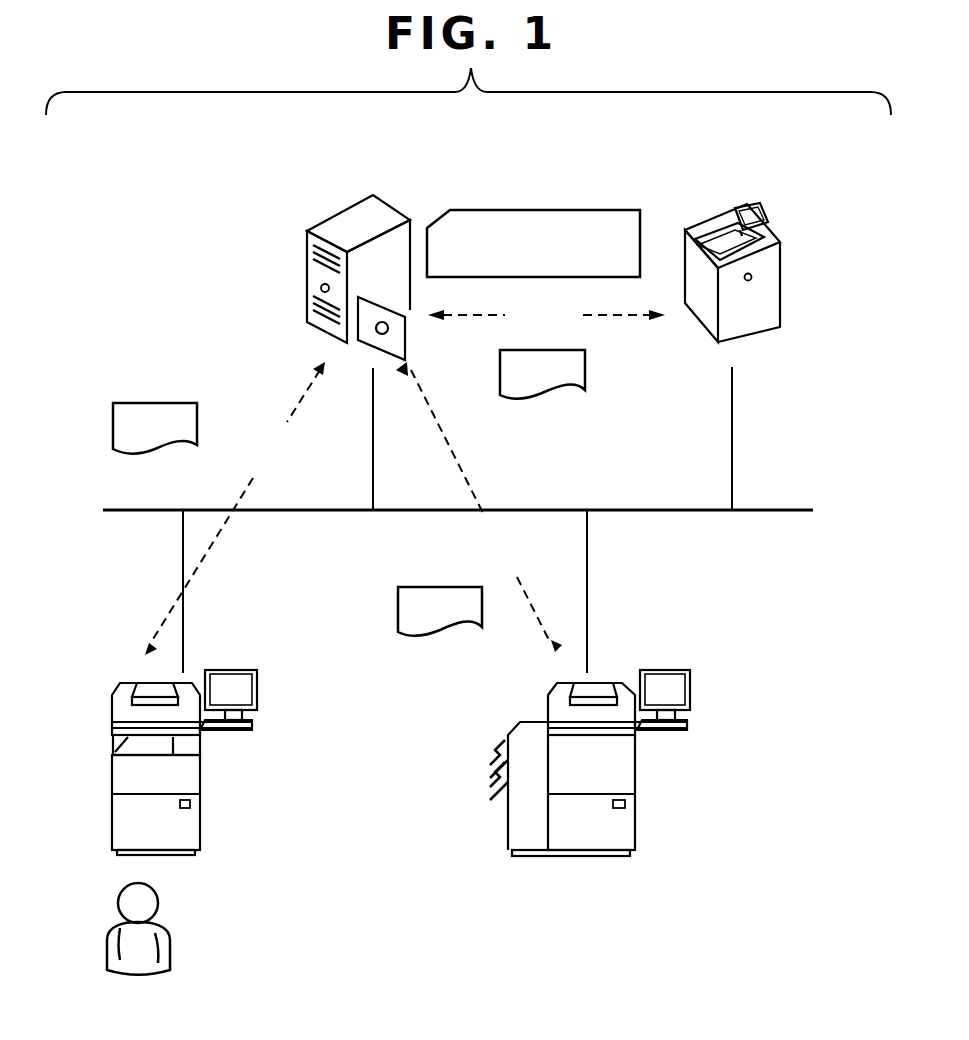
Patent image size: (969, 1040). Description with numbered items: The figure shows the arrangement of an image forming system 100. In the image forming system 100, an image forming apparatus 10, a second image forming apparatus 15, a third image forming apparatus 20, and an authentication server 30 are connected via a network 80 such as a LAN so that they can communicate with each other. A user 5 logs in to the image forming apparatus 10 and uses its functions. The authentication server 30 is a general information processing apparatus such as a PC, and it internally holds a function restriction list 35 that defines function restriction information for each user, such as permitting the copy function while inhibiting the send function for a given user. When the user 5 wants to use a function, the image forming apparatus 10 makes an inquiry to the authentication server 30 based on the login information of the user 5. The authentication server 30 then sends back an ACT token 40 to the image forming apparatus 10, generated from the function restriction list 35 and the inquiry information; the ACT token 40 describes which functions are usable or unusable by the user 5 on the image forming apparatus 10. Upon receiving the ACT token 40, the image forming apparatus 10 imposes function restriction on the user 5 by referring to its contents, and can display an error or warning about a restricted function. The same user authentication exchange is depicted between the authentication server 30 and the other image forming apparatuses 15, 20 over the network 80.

The user 5 is at (171, 938).
The image forming apparatus 10 is at (201, 773).
The image forming apparatus 15 is at (636, 765).
The image forming apparatus 20 is at (781, 260).
The authentication server 30 is at (308, 262).
The function restriction list 35 is at (625, 210).
The ACT token 40 is at (132, 402).
The network 80 is at (787, 512).
The image forming system 100 is at (464, 947).